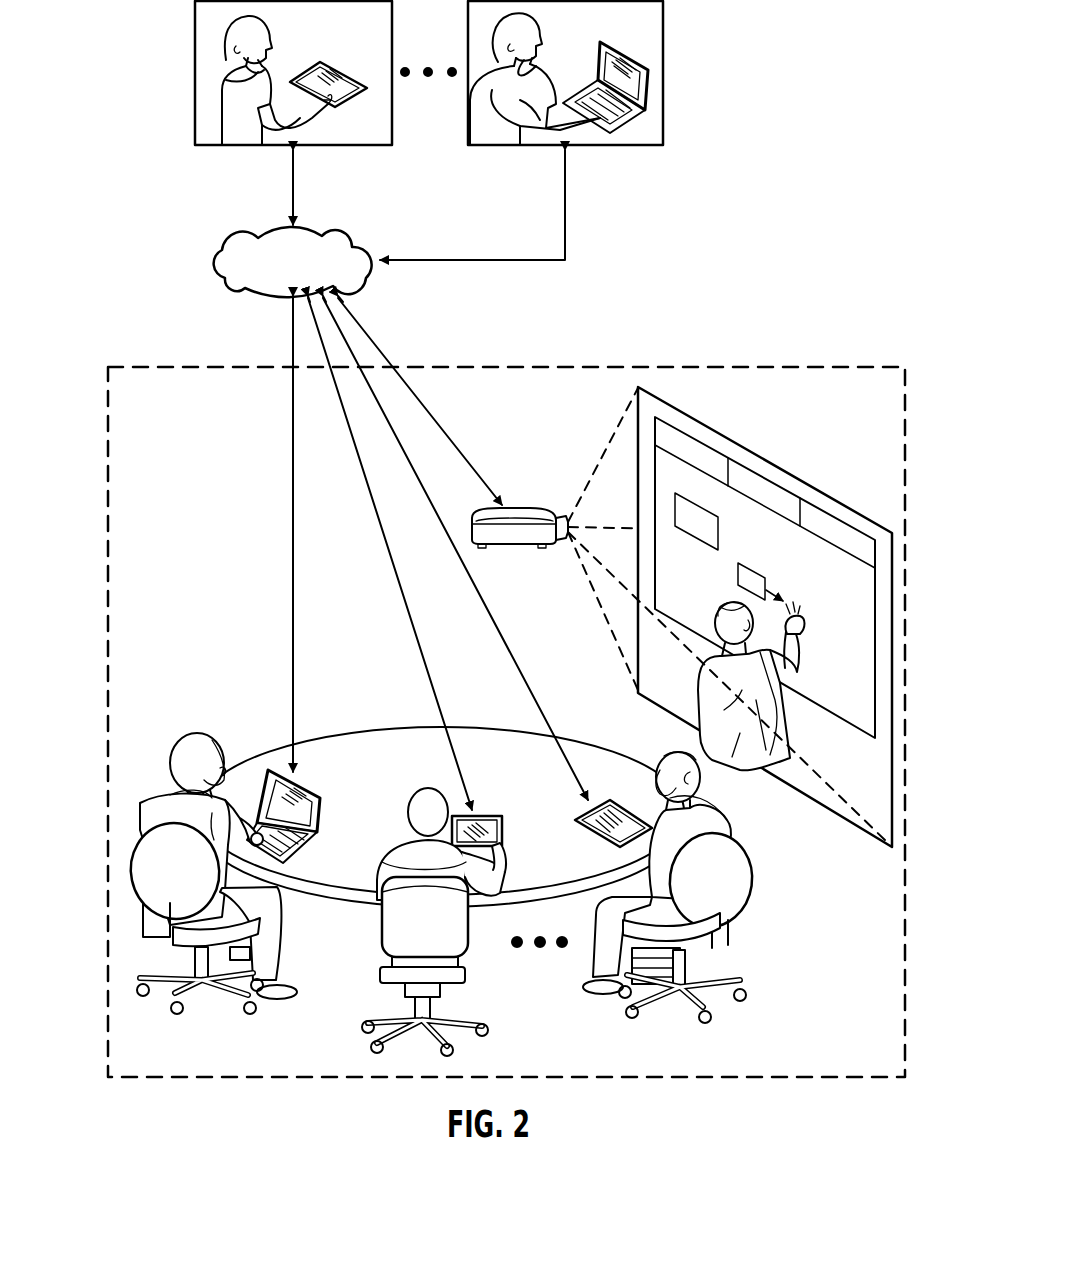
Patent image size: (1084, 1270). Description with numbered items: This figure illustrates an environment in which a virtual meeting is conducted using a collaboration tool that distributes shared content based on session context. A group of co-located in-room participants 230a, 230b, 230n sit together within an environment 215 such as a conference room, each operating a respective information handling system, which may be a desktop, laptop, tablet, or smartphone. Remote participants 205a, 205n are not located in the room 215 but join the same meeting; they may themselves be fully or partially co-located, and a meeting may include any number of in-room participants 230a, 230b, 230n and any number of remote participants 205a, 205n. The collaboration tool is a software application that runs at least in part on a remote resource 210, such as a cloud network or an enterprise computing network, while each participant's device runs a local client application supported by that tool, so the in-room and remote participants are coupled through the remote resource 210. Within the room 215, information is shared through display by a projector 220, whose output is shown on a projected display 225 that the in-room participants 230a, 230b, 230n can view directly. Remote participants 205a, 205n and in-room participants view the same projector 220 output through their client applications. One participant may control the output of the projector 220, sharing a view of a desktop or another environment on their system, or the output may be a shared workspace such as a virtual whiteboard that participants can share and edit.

The remote participant 205a is at (195, 70).
The remote participant 205n is at (663, 85).
The remote resource 210 is at (316, 276).
The environment 215 is at (695, 362).
The projector 220 is at (516, 546).
The projected shared display / whiteboard 225 is at (760, 470).
The in-room participant 230a is at (193, 733).
The in-room participant 230b is at (378, 925).
The in-room participant 230n is at (728, 818).